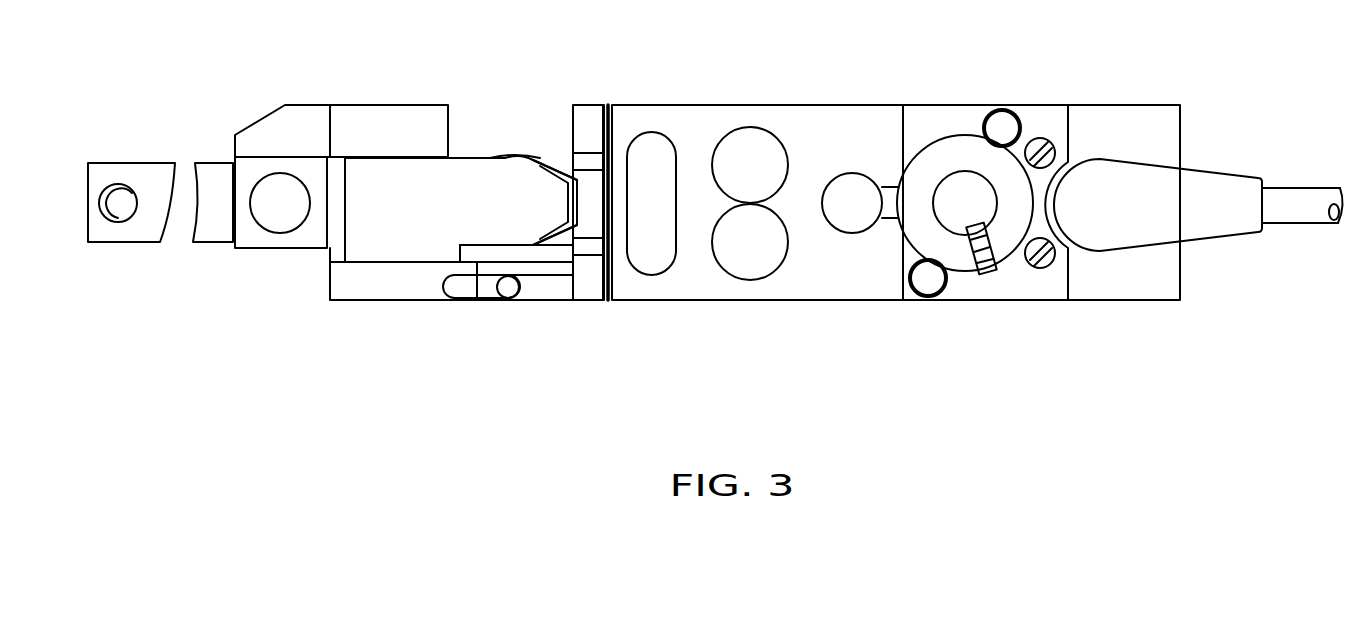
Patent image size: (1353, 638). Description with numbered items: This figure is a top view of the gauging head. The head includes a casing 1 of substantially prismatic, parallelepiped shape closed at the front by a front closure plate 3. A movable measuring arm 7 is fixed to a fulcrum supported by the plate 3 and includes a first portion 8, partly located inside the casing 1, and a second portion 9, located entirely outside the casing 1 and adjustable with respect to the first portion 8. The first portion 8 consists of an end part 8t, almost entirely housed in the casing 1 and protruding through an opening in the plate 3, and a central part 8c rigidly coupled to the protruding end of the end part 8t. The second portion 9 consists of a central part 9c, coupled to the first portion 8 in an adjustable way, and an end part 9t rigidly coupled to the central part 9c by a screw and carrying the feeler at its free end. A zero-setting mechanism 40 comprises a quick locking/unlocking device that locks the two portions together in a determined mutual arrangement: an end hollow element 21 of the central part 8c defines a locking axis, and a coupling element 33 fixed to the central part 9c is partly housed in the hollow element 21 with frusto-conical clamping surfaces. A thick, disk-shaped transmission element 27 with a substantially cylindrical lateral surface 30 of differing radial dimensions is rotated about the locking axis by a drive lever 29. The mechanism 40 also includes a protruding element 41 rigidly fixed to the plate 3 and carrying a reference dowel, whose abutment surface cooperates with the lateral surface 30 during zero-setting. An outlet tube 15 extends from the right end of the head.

The casing 1 is at (830, 130).
The front closure plate 3 is at (609, 107).
The movable measuring arm 7 is at (146, 149).
The first portion 8 is at (530, 136).
The central part 8c is at (472, 178).
The end part 8t is at (588, 190).
The second portion 9 is at (257, 106).
The central part 9c is at (352, 122).
The end part 9t is at (213, 178).
The outlet hose 15 is at (1283, 205).
The end hollow element 21 is at (397, 207).
The transmission element 27 is at (357, 290).
The drive lever 29 is at (478, 290).
The lateral surface 30 is at (395, 284).
The coupling element 33 is at (451, 158).
The zero-setting mechanism 40 is at (308, 270).
The protruding element 41 is at (553, 287).